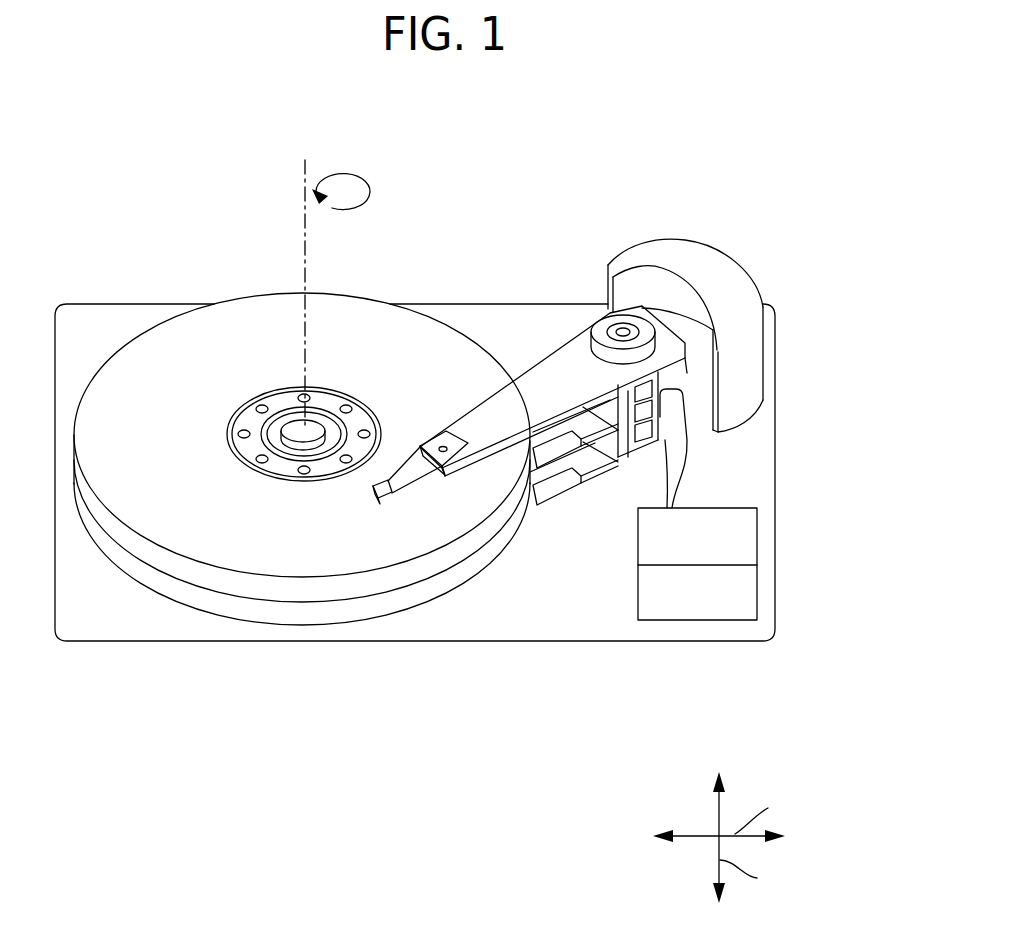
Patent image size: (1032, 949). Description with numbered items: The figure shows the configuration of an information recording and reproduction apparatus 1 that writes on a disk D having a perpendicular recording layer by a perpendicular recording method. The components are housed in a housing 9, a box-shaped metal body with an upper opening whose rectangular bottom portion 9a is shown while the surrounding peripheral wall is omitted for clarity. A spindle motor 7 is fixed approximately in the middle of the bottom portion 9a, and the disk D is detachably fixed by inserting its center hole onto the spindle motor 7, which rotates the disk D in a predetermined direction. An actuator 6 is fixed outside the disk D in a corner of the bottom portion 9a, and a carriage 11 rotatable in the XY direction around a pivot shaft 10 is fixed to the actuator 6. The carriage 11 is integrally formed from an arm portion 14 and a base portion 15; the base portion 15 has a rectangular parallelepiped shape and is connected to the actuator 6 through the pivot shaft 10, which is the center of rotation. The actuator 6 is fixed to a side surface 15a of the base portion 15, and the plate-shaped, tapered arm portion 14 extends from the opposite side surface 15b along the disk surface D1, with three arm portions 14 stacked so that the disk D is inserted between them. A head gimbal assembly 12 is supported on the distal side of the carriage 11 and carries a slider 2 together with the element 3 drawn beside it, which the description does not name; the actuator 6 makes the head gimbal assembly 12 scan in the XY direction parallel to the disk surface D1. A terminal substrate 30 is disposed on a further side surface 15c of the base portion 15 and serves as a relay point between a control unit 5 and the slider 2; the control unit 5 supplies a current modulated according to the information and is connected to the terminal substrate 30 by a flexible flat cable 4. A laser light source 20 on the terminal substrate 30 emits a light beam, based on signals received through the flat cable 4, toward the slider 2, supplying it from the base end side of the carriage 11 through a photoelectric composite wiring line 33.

The information recording and reproduction apparatus 1 is at (136, 210).
The slider 2 is at (373, 484).
The suspension 3 is at (409, 478).
The flexible flat cable 4 is at (627, 362).
The control unit 5 is at (707, 595).
The actuator 6 is at (694, 312).
The spindle motor 7 is at (299, 428).
The housing 9 is at (415, 531).
The bottom portion 9a is at (498, 618).
The pivot shaft 10 is at (624, 315).
The carriage 11 is at (539, 385).
The head gimbal assembly 12 is at (413, 607).
The arm portion 14 is at (503, 405).
The base portion 15 is at (694, 312).
The side surface 15a is at (663, 333).
The side surface 15b is at (585, 372).
The side surface 15c is at (645, 437).
The laser light source 20 is at (655, 385).
The terminal substrate 30 is at (687, 448).
The photoelectric composite wiring line 33 is at (585, 410).
The disk D is at (302, 532).
The disk surface D1 is at (200, 530).